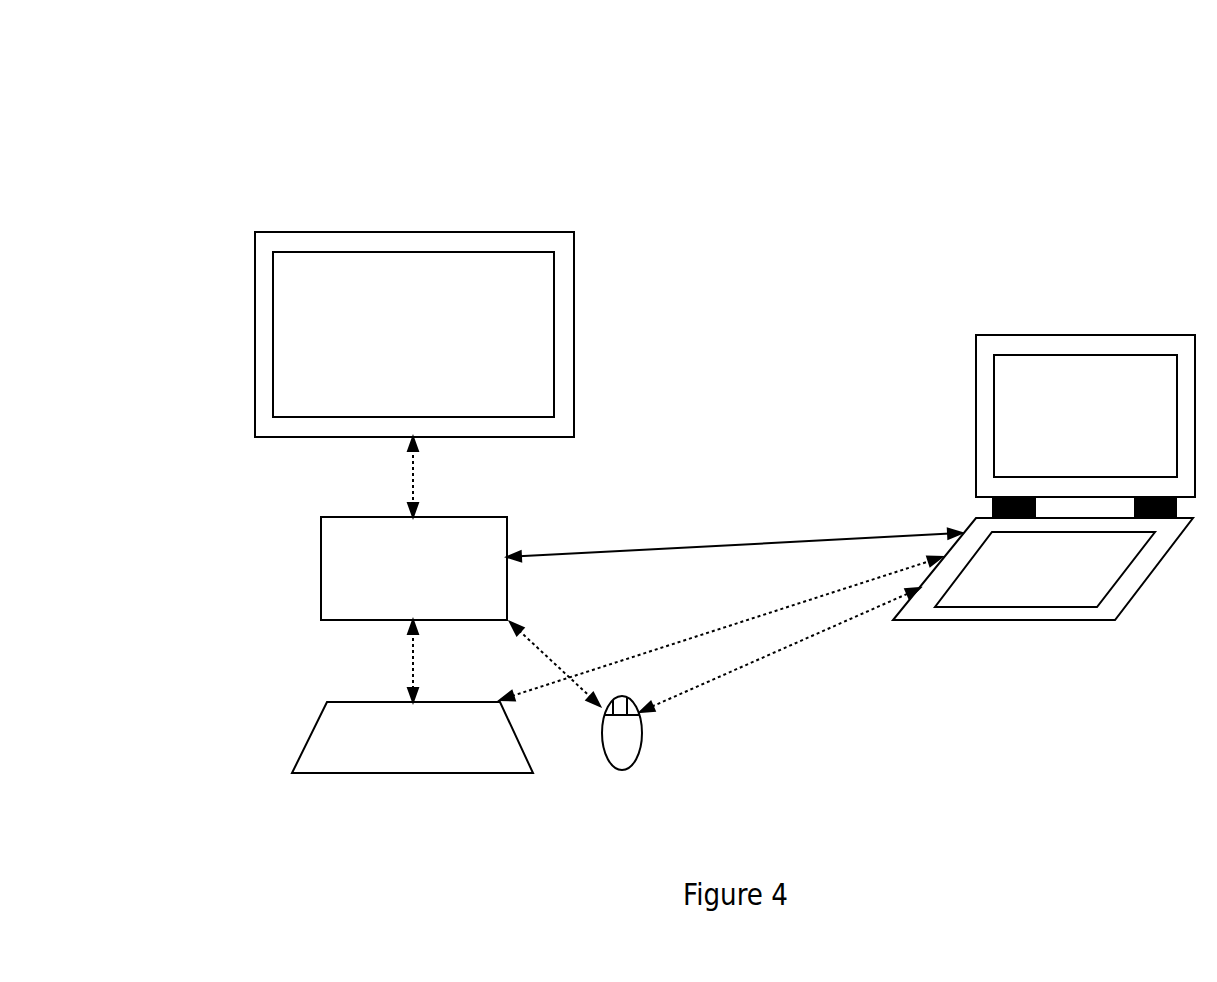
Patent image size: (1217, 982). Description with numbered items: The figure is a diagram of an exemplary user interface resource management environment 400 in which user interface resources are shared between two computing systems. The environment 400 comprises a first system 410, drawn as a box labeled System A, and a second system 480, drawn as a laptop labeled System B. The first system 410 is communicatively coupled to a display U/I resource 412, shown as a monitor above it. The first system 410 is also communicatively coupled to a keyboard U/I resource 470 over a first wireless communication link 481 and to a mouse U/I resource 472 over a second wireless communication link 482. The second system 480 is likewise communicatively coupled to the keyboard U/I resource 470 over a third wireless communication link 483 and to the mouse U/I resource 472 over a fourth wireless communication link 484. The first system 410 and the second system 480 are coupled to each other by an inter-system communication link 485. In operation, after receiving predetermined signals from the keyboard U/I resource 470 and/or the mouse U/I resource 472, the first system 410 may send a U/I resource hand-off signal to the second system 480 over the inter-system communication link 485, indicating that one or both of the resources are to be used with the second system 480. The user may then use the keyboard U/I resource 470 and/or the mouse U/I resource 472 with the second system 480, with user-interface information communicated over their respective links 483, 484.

The user interface resource management environment 400 is at (140, 125).
The first system 410 is at (321, 570).
The display U/I resource 412 is at (255, 307).
The keyboard U/I resource 470 is at (314, 728).
The mouse U/I resource 472 is at (640, 748).
The second system 480 is at (976, 436).
The first wireless communication link 481 is at (413, 658).
The second wireless communication link 482 is at (527, 637).
The third wireless communication link 483 is at (676, 642).
The fourth wireless communication link 484 is at (815, 634).
The inter-system communication link 485 is at (720, 545).